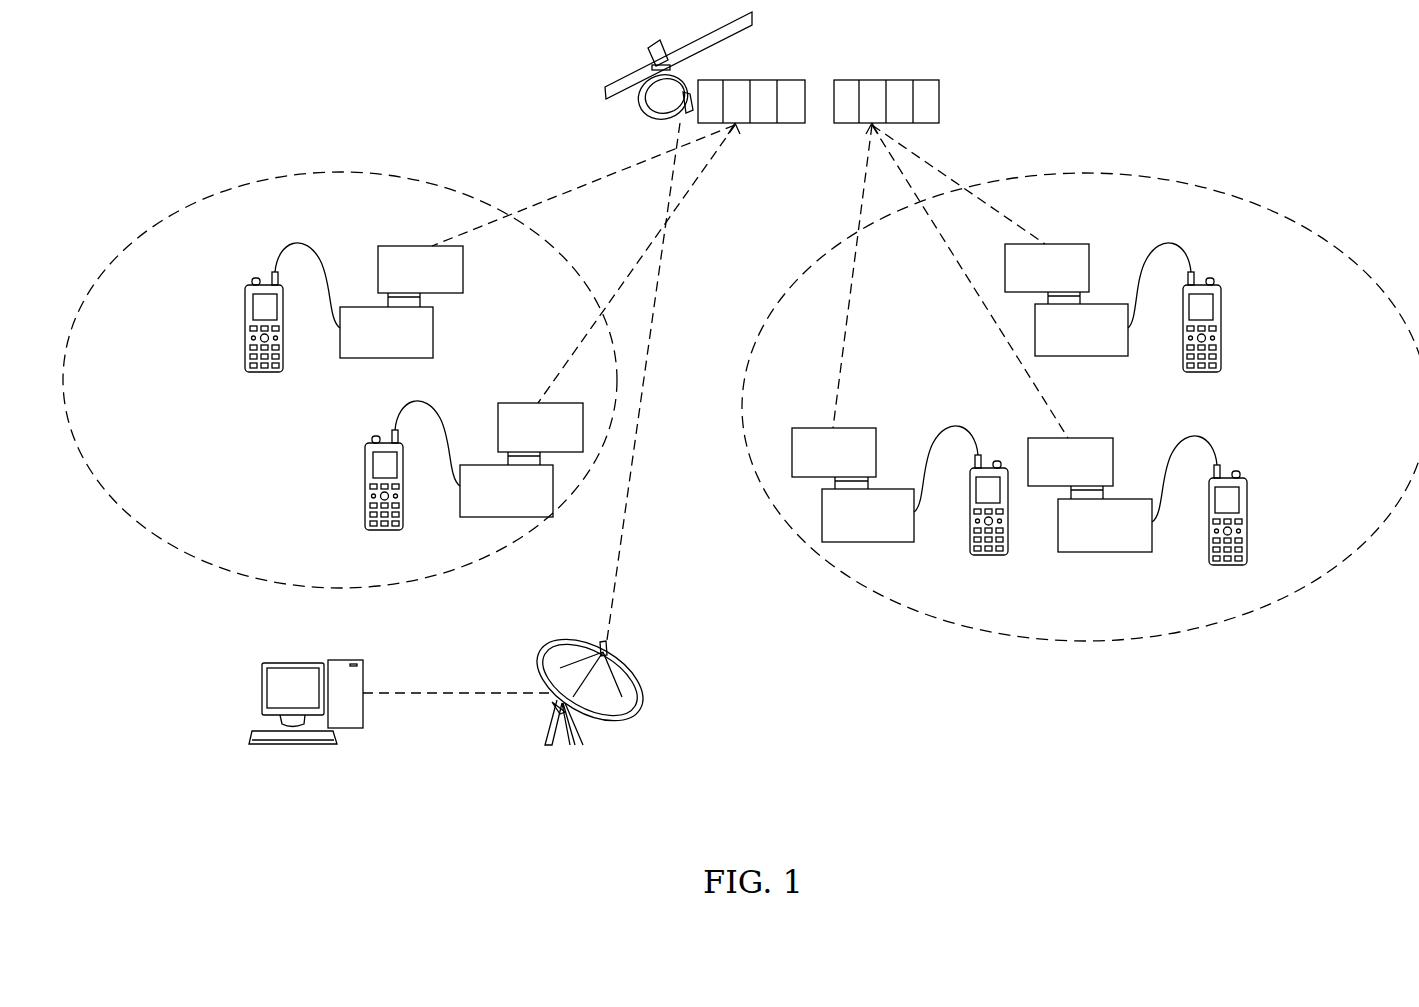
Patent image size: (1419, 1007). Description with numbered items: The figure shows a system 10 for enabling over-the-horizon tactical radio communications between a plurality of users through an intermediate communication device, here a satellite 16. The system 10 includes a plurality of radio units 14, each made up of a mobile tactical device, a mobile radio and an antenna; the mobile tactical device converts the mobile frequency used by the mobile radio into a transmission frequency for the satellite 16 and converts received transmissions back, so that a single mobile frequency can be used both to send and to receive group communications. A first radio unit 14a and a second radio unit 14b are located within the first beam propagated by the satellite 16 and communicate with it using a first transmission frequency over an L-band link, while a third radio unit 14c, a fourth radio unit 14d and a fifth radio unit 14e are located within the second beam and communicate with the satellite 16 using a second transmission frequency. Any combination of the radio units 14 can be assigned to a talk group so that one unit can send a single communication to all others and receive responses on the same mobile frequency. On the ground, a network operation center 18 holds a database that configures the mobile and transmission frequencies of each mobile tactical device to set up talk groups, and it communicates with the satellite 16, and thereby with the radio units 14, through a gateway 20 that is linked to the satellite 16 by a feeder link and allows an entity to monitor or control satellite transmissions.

The system 10 is at (290, 117).
The radio units 14 is at (753, 408).
The first radio unit 14a is at (232, 300).
The second radio unit 14b is at (355, 452).
The third radio unit 14c is at (1290, 272).
The fourth radio unit 14d is at (1310, 458).
The fifth radio unit 14e is at (998, 450).
The satellite 16 is at (623, 62).
The network operation center 18 is at (260, 675).
The gateway 20 is at (540, 656).